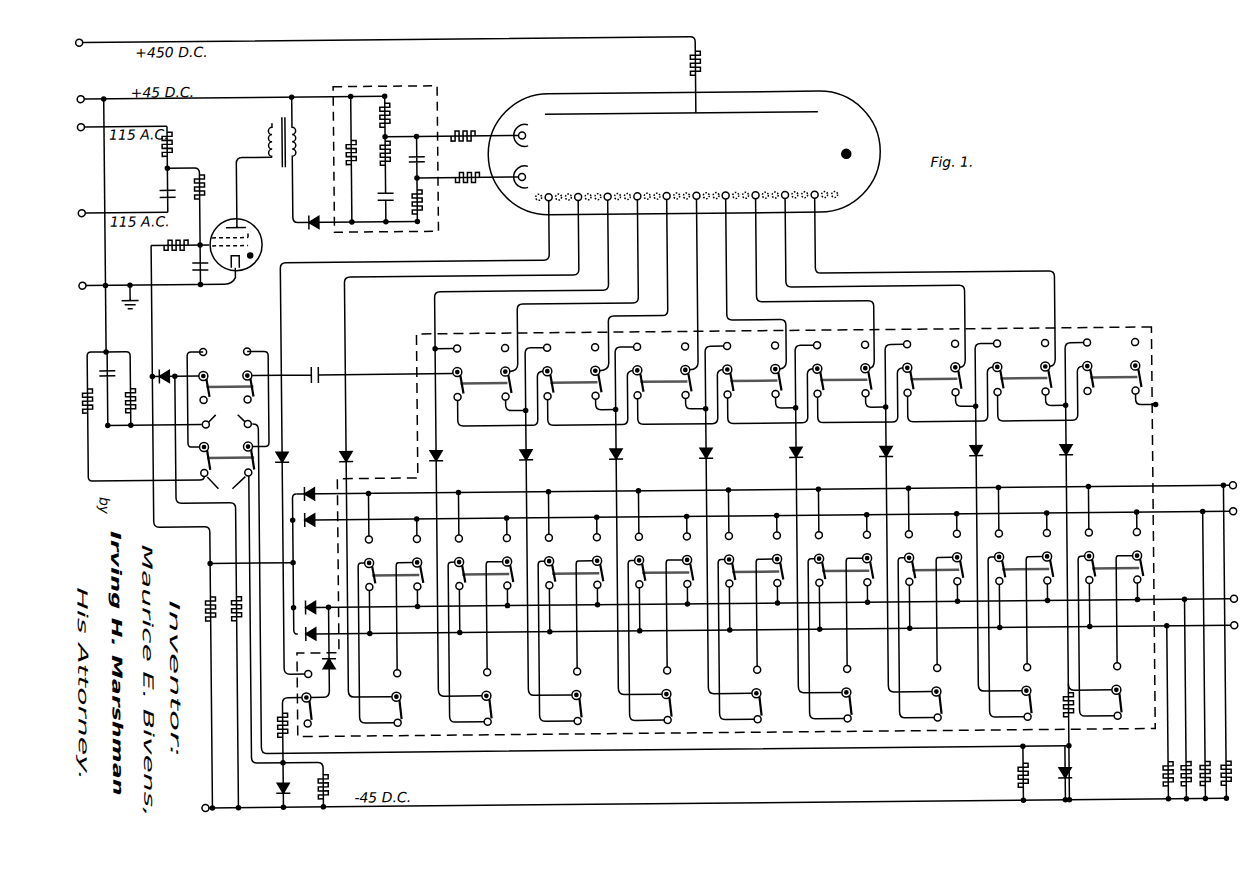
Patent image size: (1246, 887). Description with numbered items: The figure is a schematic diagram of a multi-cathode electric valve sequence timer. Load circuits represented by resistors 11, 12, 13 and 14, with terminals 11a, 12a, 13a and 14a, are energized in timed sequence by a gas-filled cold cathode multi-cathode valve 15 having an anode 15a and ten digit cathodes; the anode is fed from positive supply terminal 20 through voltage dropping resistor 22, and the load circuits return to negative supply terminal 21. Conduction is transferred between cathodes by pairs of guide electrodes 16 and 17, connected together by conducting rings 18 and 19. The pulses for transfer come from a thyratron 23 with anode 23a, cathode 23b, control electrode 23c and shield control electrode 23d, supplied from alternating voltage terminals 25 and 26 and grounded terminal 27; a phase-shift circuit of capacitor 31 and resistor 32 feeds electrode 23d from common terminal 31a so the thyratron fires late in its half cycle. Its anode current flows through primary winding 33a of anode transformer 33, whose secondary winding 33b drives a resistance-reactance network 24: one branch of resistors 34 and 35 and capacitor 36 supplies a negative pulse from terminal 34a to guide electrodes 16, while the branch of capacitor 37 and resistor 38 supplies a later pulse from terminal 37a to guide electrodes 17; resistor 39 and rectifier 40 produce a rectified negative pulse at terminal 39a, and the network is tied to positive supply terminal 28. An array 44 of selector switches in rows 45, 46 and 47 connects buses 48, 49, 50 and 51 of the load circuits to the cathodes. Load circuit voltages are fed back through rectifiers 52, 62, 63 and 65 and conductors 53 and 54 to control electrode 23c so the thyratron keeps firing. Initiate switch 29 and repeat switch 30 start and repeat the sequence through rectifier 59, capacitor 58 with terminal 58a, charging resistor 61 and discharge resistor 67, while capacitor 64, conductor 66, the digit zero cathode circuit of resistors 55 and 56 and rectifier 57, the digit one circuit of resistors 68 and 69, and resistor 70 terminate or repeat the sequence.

The load circuit resistor 11 is at (1155, 713).
The upper terminal of load circuit 11 11a is at (1235, 641).
The load circuit resistor 12 is at (1193, 700).
The positive load circuit terminal 12a is at (1234, 585).
The load circuit resistor 13 is at (1212, 655).
The load circuit terminal 13a is at (1234, 527).
The load circuit resistor 14 is at (1232, 642).
The positive terminal of load circuit 14 14a is at (1230, 471).
The multi-cathode electric valve 15 is at (683, 144).
The anode 15a is at (681, 127).
The guide electrodes 16 is at (687, 158).
The guide electrodes 17 is at (604, 199).
The conducting ring 18 is at (509, 122).
The conducting ring 19 is at (505, 188).
The direct voltage supply terminal 20 is at (386, 75).
The direct voltage supply terminal 21 is at (708, 792).
The voltage dropping resistor 22 is at (713, 61).
The thyratron 23 is at (236, 234).
The anode 23a is at (249, 192).
The cathode 23b is at (250, 272).
The control electrode 23c is at (255, 248).
The shield control electrode 23d is at (251, 226).
The resistance-reactance network 24 is at (386, 143).
The alternating voltage supply terminal 25 is at (123, 199).
The alternating voltage supply terminal 26 is at (122, 139).
The grounded terminal 27 is at (157, 282).
The direct voltage supply terminal 28 is at (232, 87).
The initiate switch 29 is at (228, 397).
The repeat switch 30 is at (226, 449).
The capacitor 31 is at (151, 190).
The common terminal 31a is at (165, 202).
The resistor 32 is at (182, 147).
The anode transformer 33 is at (267, 133).
The primary winding 33a is at (253, 139).
The secondary winding 33b is at (355, 159).
The resistor 34 is at (396, 116).
The terminal 34a is at (385, 132).
The resistor 35 is at (375, 165).
The capacitor 36 is at (376, 207).
The capacitor 37 is at (435, 156).
The terminal 37a is at (453, 175).
The resistor 38 is at (436, 200).
The resistor 39 is at (333, 160).
The terminal 39a is at (385, 234).
The rectifier 40 is at (321, 233).
The array of selector switches 44 is at (725, 514).
The row of sequence terminating switches 45 is at (833, 379).
The row of selector switches 46 is at (786, 604).
The row of selector switches 47 is at (732, 689).
The bus 48 is at (773, 646).
The bus 49 is at (772, 591).
The bus 50 is at (772, 507).
The bus 51 is at (762, 479).
The rectifier 52 is at (290, 640).
The conductor 53 is at (250, 550).
The conductor 54 is at (184, 527).
The resistor 55 is at (1081, 742).
The resistor 56 is at (1004, 773).
The rectifier 57 is at (1081, 772).
The capacitor 58 is at (117, 379).
The capacitor terminal 58a is at (155, 439).
The rectifier 59 is at (174, 361).
The resistor 61 is at (209, 592).
The rectifier 62 is at (316, 596).
The rectifier 63 is at (316, 529).
The capacitor 64 is at (352, 382).
The rectifier 65 is at (315, 477).
The conductor 66 is at (660, 596).
The discharge resistor 67 is at (149, 407).
The resistor 68 is at (307, 684).
The resistor 69 is at (306, 641).
The resistor 70 is at (143, 416).